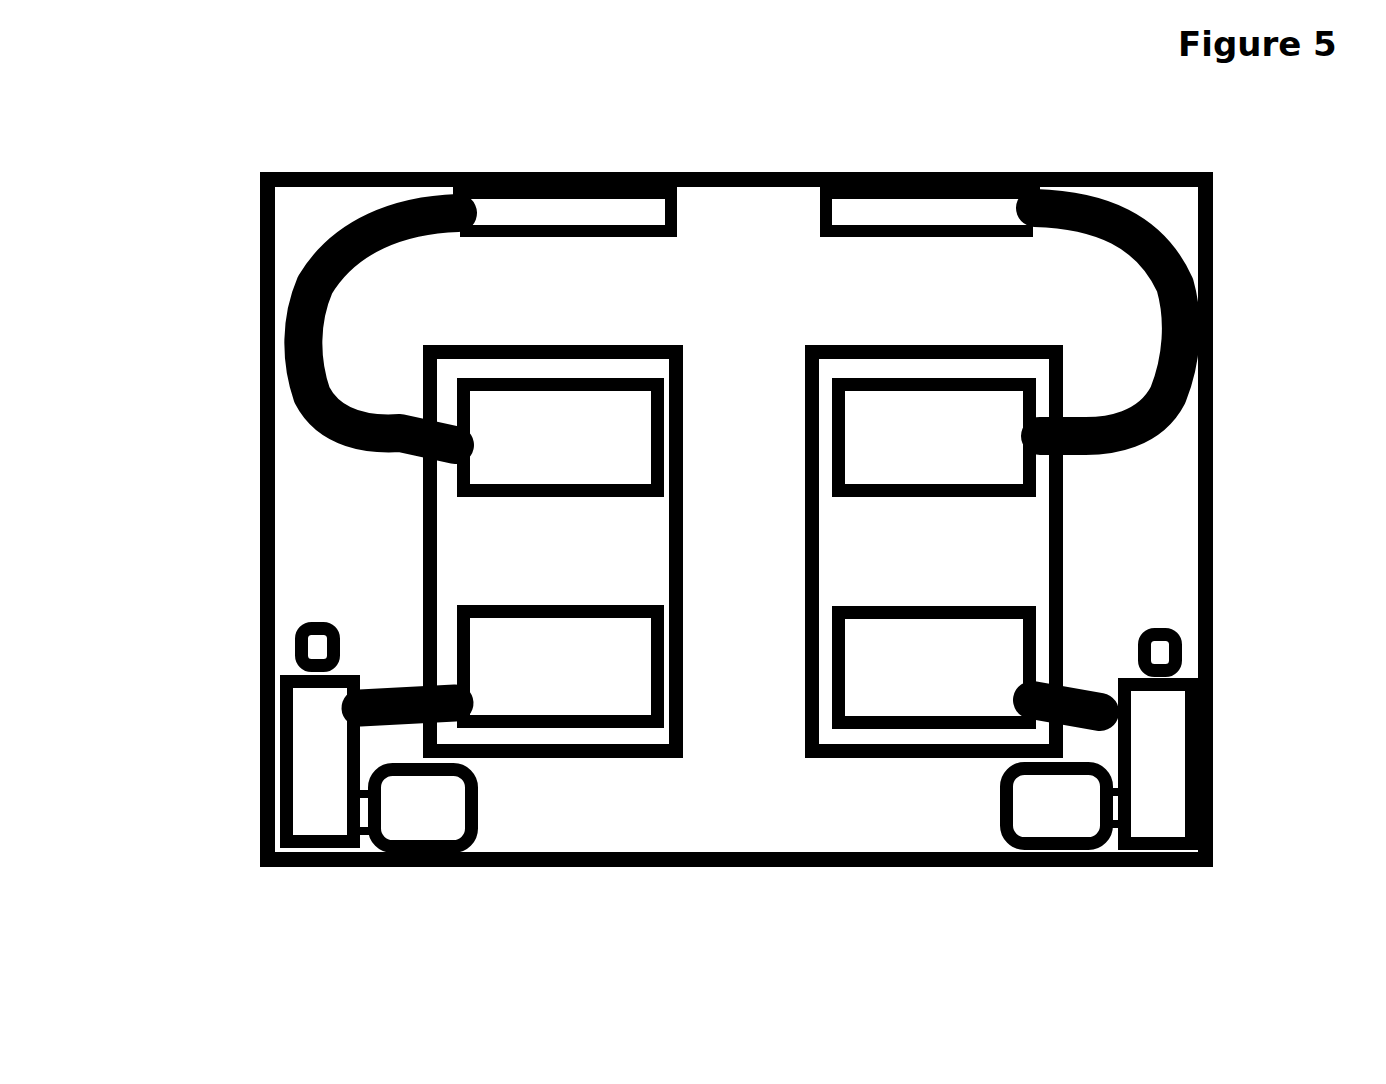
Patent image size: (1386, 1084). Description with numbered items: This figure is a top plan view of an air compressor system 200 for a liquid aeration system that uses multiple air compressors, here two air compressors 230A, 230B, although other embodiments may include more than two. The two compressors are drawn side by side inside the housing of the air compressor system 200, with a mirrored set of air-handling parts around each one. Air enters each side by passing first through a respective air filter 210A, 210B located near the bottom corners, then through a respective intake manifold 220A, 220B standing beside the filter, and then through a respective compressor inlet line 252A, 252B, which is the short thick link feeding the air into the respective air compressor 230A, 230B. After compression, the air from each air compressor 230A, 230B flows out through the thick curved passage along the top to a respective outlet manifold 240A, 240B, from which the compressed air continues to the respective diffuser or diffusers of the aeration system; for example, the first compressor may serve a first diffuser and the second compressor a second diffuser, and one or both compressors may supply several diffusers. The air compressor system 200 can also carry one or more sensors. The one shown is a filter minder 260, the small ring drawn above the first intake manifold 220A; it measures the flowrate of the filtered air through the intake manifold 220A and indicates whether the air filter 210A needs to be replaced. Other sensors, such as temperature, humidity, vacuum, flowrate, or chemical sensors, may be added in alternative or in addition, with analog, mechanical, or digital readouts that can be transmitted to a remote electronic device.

The air compressor system 200 is at (202, 217).
The air filter 210A is at (482, 808).
The air filter 210B is at (998, 808).
The intake manifold 220A is at (288, 658).
The intake manifold 220B is at (1200, 665).
The air compressor 230A is at (403, 530).
The air compressor 230B is at (1078, 528).
The outlet manifold 240A is at (572, 170).
The outlet manifold 240B is at (920, 170).
The compressor inlet line 252A is at (393, 673).
The compressor inlet line 252B is at (1083, 667).
The filter minder 260 is at (307, 627).